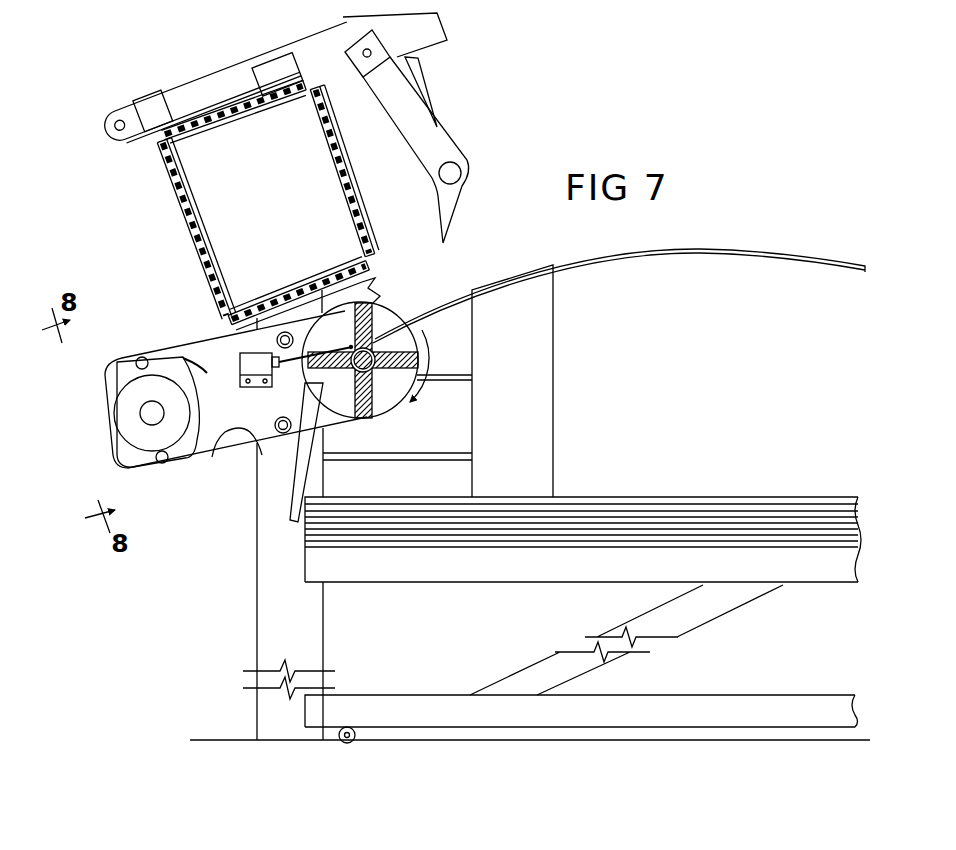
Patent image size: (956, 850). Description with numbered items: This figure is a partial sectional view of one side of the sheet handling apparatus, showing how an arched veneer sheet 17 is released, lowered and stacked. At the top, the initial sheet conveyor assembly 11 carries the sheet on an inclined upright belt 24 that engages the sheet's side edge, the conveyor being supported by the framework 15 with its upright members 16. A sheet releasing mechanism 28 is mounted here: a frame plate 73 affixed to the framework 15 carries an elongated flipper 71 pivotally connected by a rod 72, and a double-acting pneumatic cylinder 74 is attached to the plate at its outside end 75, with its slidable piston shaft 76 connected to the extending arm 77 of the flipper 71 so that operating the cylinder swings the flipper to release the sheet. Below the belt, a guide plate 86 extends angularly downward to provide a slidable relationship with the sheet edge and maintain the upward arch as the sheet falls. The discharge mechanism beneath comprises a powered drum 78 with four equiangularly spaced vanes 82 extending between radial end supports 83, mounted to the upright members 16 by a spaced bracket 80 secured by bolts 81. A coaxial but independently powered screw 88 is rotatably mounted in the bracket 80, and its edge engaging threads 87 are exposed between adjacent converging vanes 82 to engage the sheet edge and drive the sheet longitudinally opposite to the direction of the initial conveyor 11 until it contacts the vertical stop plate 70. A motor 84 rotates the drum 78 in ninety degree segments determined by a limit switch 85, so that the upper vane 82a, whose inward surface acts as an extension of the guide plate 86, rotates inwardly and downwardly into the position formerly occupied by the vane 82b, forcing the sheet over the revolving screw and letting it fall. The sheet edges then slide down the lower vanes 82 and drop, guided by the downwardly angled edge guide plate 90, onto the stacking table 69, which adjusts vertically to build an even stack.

The initial sheet conveyor assembly 11 is at (150, 162).
The framework 15 is at (332, 617).
The upright members 16 is at (296, 646).
The sheet 17 is at (655, 267).
The belt 24 is at (178, 206).
The sheet releasing mechanism 28 is at (154, 82).
The stacking table 69 is at (548, 568).
The stop plate 70 is at (540, 352).
The flipper 71 is at (452, 197).
The rod 72 is at (420, 80).
The frame plate 73 is at (277, 74).
The double-acting pneumatic cylinder 74 is at (153, 111).
The outside end 75 is at (119, 125).
The piston shaft 76 is at (333, 60).
The extending arm 77 is at (398, 105).
The drum 78 is at (343, 298).
The bracket 80 is at (246, 421).
The bolt 81 is at (277, 339).
The vane 82 is at (360, 398).
The upper vane 82a is at (378, 318).
The inwardly projecting vane 82b is at (414, 343).
The radial end support 83 is at (387, 407).
The motor 84 is at (124, 416).
The limit switch 85 is at (247, 367).
The guide plate 86 is at (382, 272).
The thread 87 is at (354, 348).
The screw 88 is at (370, 376).
The edge guide plate 90 is at (305, 453).